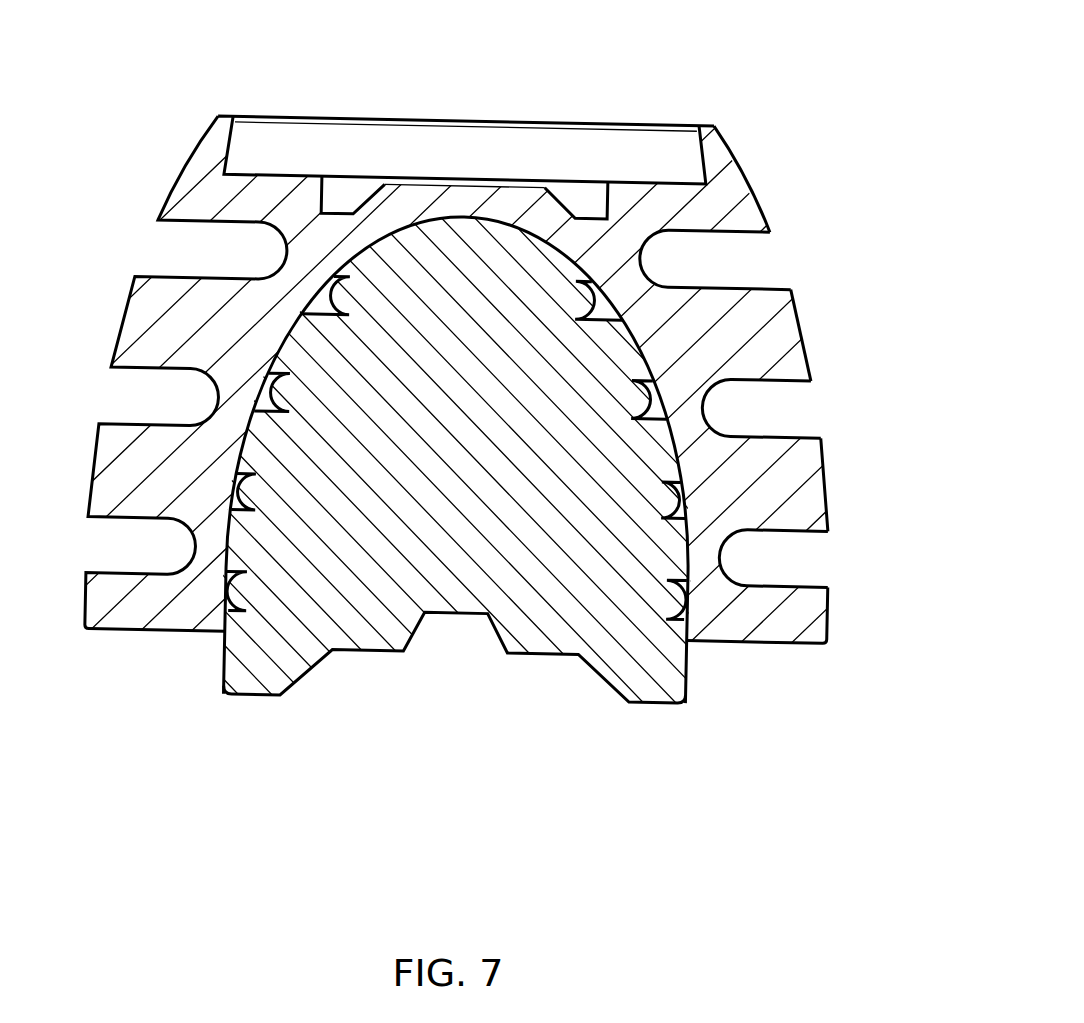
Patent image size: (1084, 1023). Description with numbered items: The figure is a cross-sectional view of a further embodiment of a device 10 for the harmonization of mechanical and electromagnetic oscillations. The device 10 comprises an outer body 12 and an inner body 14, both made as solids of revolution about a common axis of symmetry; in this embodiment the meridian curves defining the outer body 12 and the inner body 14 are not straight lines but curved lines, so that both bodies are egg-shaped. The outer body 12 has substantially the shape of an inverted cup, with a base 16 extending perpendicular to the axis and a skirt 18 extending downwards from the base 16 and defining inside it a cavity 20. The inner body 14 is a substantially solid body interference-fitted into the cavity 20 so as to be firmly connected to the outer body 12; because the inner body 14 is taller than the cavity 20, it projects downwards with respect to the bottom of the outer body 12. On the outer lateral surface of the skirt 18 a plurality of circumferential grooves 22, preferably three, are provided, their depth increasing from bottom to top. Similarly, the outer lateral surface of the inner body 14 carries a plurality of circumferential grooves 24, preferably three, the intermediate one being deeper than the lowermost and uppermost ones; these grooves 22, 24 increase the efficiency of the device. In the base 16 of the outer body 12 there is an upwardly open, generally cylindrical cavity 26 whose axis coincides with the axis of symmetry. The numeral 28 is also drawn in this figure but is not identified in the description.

The device for the harmonization of mechanical and electromagnetic oscillations 10 is at (772, 160).
The outer body 12 is at (728, 148).
The inner body 14 is at (262, 698).
The base 16 is at (627, 193).
The skirt 18 is at (805, 328).
The cavity 20 is at (232, 535).
The circumferential grooves 22 is at (647, 266).
The circumferential grooves 24 is at (647, 495).
The cavity 26 is at (237, 137).
The undercut pocket 28 is at (328, 193).